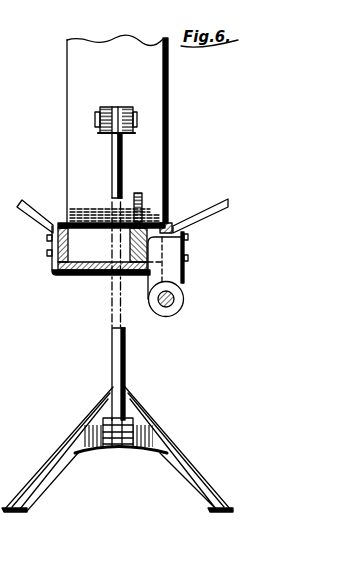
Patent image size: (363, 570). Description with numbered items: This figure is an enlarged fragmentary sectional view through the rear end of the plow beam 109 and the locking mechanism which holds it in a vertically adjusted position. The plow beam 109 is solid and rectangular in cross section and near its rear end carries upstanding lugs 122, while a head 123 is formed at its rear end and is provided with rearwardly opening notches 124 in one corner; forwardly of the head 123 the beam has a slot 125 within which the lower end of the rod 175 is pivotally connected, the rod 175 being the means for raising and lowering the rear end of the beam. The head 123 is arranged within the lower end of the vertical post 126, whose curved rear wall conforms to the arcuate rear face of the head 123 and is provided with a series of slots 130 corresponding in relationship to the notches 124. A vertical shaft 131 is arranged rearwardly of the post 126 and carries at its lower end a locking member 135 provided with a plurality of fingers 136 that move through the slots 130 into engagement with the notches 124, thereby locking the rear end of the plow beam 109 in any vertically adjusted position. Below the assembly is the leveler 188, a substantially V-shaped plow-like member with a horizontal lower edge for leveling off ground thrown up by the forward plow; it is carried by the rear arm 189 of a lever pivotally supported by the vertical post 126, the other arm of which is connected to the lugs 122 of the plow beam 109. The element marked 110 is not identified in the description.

The upright column 110 is at (67, 88).
The plow beam 109 is at (168, 128).
The upstanding lugs 122 is at (126, 107).
The slot 125 is at (139, 193).
The rod 175 is at (150, 210).
The notches 124 is at (152, 222).
The head 123 is at (80, 247).
The vertical post 126 is at (68, 273).
The fingers 136 is at (188, 238).
The slots 130 is at (185, 270).
The vertical shaft 131 is at (187, 290).
The locking member 135 is at (168, 317).
The rear arm 189 is at (125, 363).
The leveler 188 is at (165, 443).